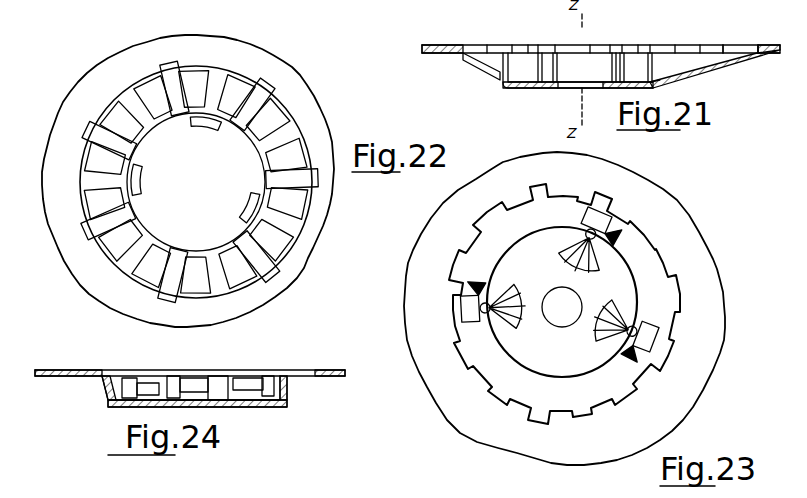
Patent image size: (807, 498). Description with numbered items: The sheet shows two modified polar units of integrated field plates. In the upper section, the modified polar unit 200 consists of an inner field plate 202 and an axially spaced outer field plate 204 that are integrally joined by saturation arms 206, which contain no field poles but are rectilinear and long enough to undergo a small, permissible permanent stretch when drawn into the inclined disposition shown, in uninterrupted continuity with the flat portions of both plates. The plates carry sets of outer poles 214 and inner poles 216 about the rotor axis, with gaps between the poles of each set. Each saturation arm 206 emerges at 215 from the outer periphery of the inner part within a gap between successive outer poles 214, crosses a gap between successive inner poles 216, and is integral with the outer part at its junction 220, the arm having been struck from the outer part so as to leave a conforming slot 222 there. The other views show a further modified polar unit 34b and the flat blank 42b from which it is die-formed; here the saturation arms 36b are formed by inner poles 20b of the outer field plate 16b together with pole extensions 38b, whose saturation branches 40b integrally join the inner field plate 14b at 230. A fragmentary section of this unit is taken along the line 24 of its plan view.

In FIG. 21, the modified polar unit 200 is at (668, 44).
In FIG. 21, the inner field plate 202 is at (542, 90).
In FIG. 21, the outer field plate 204 is at (602, 46).
In FIG. 21, the saturation arm 206 is at (468, 64).
In FIG. 21, the outer pole 214 is at (505, 52).
In FIG. 21, the emergence point of saturation arm 215 is at (656, 86).
In FIG. 21, the inner pole 216 is at (530, 52).
In FIG. 21, the junction of saturation arm with outer blank part 220 is at (758, 46).
In FIG. 21, the conforming slot 222 is at (720, 46).
In FIG. 22, the blank 42b is at (294, 70).
In FIG. 23, the inner field plate 14b is at (613, 266).
In FIG. 24, the inner field plate 14b is at (279, 410).
In FIG. 23, the outer field plate 16b is at (682, 228).
In FIG. 24, the outer field plate 16b is at (58, 369).
In FIG. 23, the inner pole 20b is at (568, 218).
In FIG. 24, the inner pole 20b is at (116, 378).
In FIG. 23, the junction of saturation branch with inner field plate 230 is at (560, 246).
In FIG. 23, the section line 24 is at (430, 312).
In FIG. 23, the modified polar unit 34b is at (668, 190).
In FIG. 24, the modified polar unit 34b is at (285, 362).
In FIG. 23, the saturation arm 36b is at (598, 221).
In FIG. 24, the saturation arm 36b is at (205, 372).
In FIG. 23, the pole extension 38b is at (598, 225).
In FIG. 24, the pole extension 38b is at (112, 402).
In FIG. 23, the saturation branch 40b is at (580, 240).
In FIG. 24, the saturation branch 40b is at (120, 402).